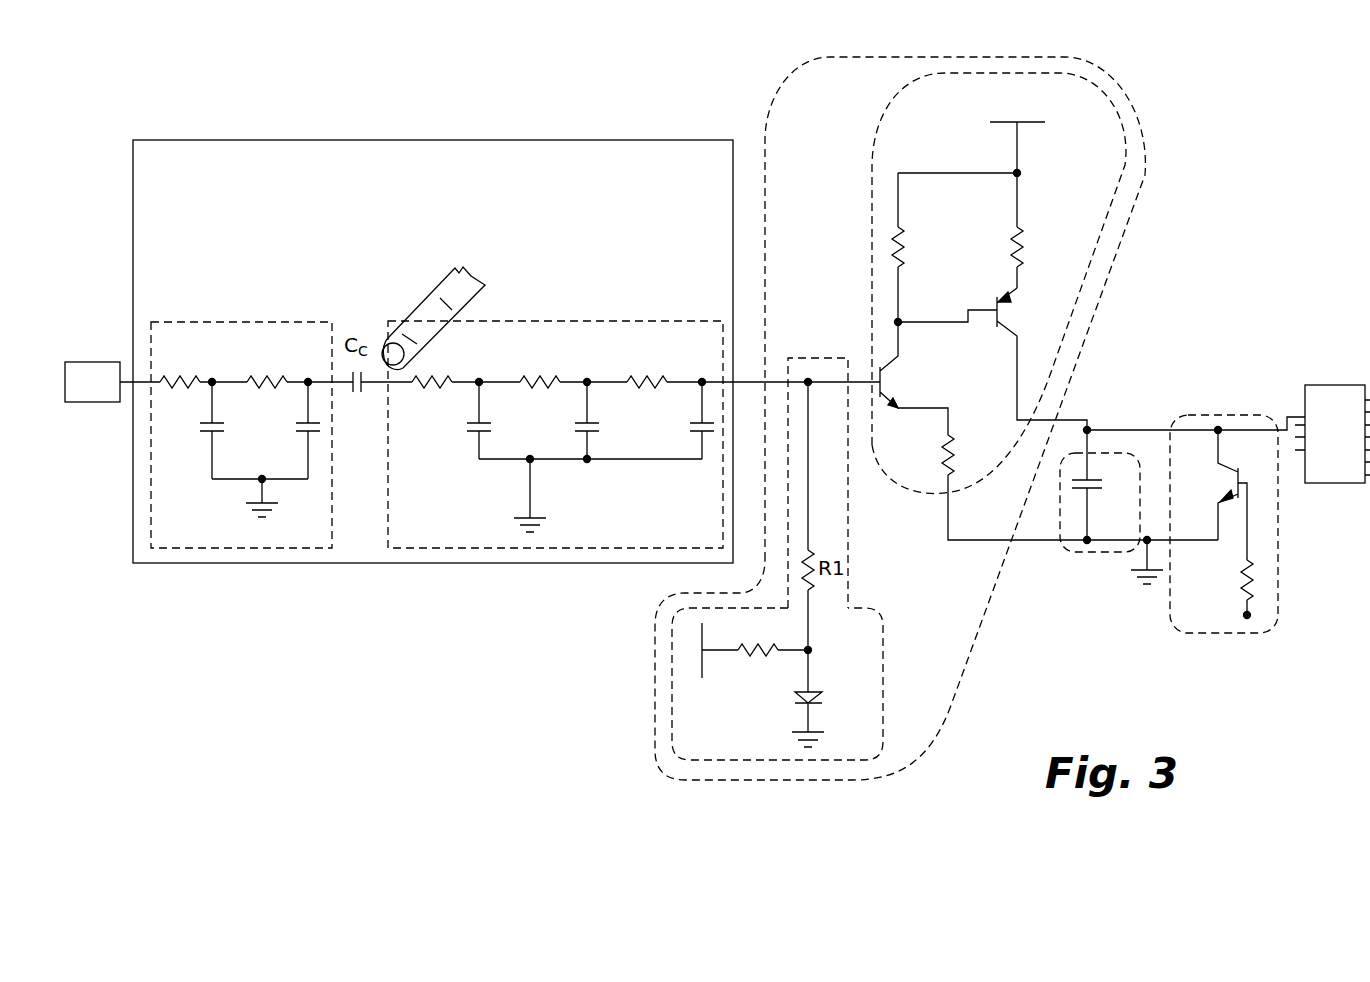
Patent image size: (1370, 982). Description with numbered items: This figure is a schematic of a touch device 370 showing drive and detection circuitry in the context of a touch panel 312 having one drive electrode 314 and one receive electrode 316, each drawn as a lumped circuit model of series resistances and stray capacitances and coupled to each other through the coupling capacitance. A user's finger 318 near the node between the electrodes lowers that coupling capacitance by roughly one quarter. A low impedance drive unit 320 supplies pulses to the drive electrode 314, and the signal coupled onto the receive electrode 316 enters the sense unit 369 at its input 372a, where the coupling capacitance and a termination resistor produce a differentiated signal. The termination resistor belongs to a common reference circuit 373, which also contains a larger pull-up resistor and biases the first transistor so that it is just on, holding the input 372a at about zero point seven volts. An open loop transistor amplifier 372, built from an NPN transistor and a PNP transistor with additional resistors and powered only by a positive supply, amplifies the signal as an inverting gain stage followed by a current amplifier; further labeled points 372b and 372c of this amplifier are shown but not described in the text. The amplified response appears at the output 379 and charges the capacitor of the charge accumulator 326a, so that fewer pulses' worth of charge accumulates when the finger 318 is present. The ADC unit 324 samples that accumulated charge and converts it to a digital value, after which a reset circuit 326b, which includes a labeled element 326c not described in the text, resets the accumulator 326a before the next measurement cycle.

The touch panel 312 is at (652, 139).
The drive electrode 314 is at (217, 320).
The receive electrode 316 is at (593, 320).
The finger 318 is at (463, 278).
The drive unit 320 is at (88, 370).
The analog-to-digital converter unit 324 is at (1335, 392).
The charge accumulator 326a is at (1076, 553).
The reset circuit 326b is at (1224, 555).
The resistor of transistor block 326c is at (1245, 613).
The sense unit 369 is at (1137, 228).
The touch device 370 is at (961, 412).
The transistor amplifier circuit 372 is at (1039, 306).
The input of the sense unit 372a is at (808, 378).
The intermediate node 372b is at (900, 320).
The supply node 372c is at (1019, 174).
The common reference circuit 373 is at (883, 652).
The output of the sense unit 379 is at (1090, 428).